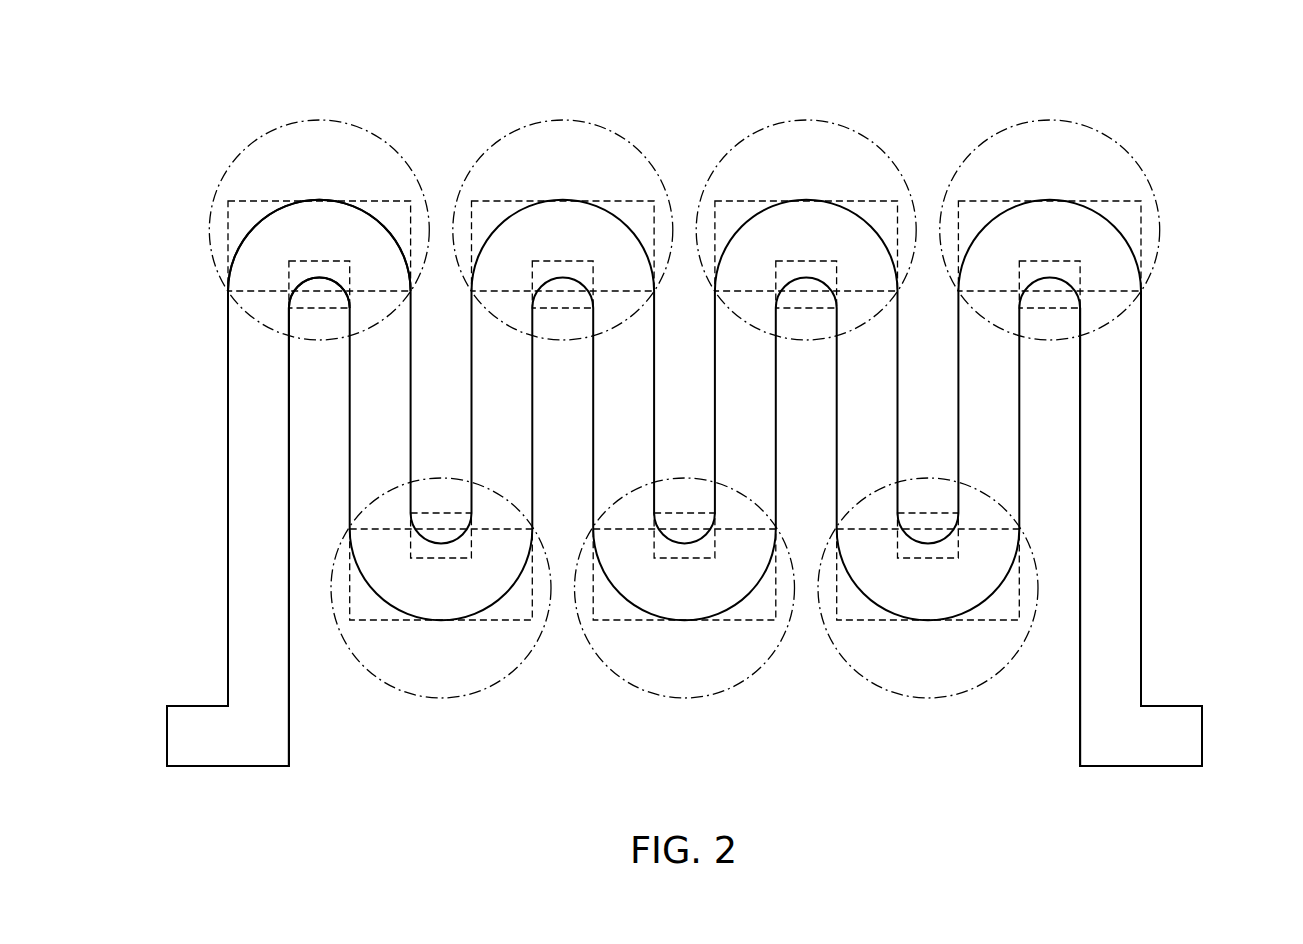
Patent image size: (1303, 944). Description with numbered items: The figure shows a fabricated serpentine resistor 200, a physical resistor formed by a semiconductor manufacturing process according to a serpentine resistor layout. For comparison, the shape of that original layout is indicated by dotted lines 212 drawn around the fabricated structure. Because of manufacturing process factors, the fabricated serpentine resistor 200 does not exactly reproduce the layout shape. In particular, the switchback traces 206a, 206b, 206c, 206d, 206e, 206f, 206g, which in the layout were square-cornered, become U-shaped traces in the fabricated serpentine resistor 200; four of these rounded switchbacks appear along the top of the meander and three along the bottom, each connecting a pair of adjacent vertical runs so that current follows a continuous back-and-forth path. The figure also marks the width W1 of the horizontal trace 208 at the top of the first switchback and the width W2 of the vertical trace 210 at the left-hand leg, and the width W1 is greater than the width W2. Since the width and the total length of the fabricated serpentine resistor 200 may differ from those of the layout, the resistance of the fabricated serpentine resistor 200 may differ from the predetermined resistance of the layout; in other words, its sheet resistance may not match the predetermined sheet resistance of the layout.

The fabricated serpentine resistor 200 is at (1212, 74).
The switchback trace 206a is at (320, 120).
The switchback trace 206b is at (563, 120).
The switchback trace 206c is at (806, 120).
The switchback trace 206d is at (1050, 120).
The switchback trace 206e is at (441, 698).
The switchback trace 206f is at (684, 698).
The switchback trace 206g is at (928, 698).
The horizontal trace 208 is at (281, 201).
The vertical trace 210 is at (228, 453).
The dotted lines 212 is at (1141, 452).
The width of the horizontal trace W1 is at (319, 201).
The width of the vertical trace W2 is at (289, 423).